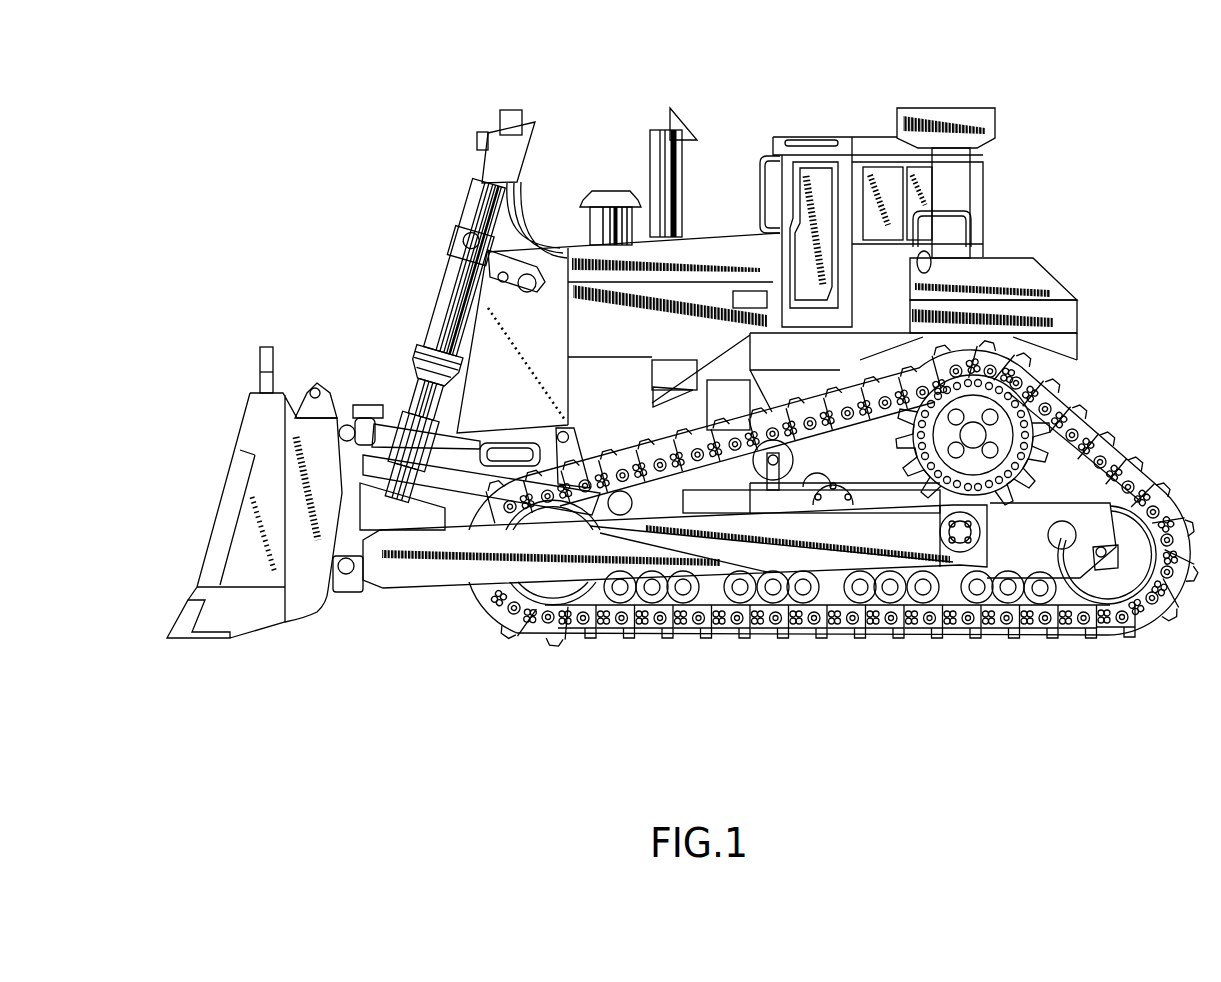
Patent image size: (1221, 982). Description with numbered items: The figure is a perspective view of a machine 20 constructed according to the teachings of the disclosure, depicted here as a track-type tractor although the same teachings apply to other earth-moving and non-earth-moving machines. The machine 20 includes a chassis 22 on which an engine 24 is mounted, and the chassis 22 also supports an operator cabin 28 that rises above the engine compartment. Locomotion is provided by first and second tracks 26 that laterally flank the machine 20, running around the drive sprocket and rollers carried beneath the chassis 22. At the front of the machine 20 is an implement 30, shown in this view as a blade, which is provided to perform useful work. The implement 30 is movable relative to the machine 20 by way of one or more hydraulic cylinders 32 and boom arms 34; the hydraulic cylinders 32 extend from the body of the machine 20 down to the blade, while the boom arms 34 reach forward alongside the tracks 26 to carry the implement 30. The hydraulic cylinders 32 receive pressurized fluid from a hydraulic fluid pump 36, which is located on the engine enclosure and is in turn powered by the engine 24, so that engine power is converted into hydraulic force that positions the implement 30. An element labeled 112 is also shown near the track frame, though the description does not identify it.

The machine 20 is at (452, 158).
The chassis 22 is at (872, 438).
The engine 24 is at (636, 346).
The tracks 26 is at (646, 640).
The operator cabin 28 is at (840, 157).
The implement 30 is at (222, 494).
The hydraulic cylinders 32 is at (462, 213).
The boom arms 34 is at (462, 573).
The hydraulic fluid pump 36 is at (753, 290).
The track roller frame 112 is at (1040, 483).